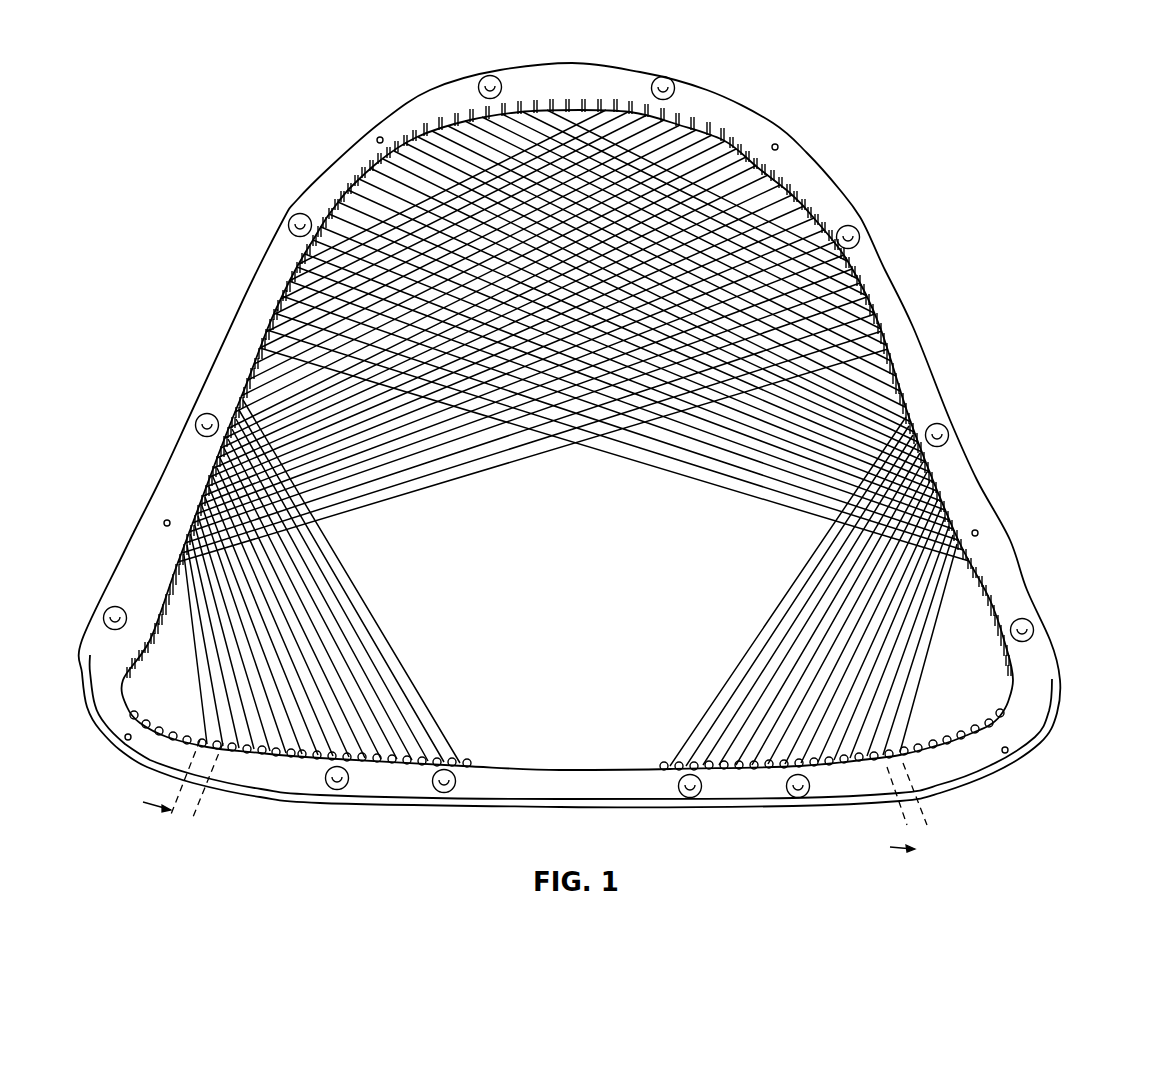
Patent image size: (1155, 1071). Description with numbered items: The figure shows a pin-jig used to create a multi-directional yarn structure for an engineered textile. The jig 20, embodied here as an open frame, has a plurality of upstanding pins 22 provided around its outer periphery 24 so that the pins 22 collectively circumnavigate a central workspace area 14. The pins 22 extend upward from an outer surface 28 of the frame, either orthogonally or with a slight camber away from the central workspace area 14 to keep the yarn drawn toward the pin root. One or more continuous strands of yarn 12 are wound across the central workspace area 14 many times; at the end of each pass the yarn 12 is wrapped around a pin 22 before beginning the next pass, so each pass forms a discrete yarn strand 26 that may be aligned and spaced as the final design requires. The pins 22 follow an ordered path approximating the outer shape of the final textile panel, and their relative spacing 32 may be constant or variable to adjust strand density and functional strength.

The yarn 12 is at (747, 641).
The central workspace area 14 is at (548, 594).
The jig 20 is at (1042, 701).
The upstanding pins 22 is at (625, 100).
The outer periphery 24 is at (803, 189).
The yarn strand 26 is at (683, 479).
The outer surface 28 is at (878, 292).
The spacing 32 is at (192, 823).